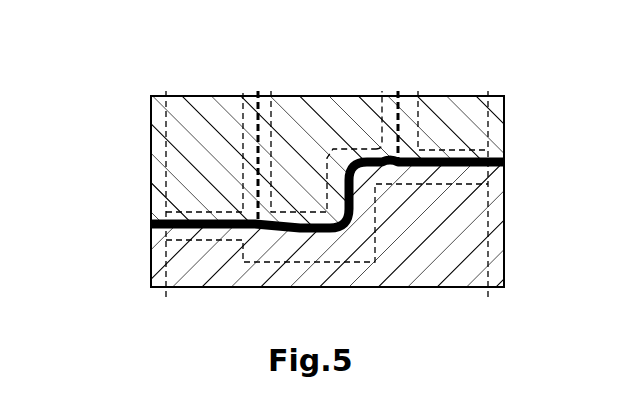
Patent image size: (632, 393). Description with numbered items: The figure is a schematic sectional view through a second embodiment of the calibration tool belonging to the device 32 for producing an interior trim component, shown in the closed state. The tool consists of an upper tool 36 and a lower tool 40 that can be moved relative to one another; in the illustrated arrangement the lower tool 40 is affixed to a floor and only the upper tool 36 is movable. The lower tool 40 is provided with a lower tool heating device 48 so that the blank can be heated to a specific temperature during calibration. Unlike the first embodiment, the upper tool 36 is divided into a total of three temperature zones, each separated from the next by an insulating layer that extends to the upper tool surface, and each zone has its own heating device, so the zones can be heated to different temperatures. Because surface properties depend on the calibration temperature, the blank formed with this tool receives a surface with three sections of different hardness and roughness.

The device 32 is at (264, 245).
The upper tool 36 is at (150, 166).
The lower tool 40 is at (494, 270).
The lower tool heating device 48 is at (170, 275).